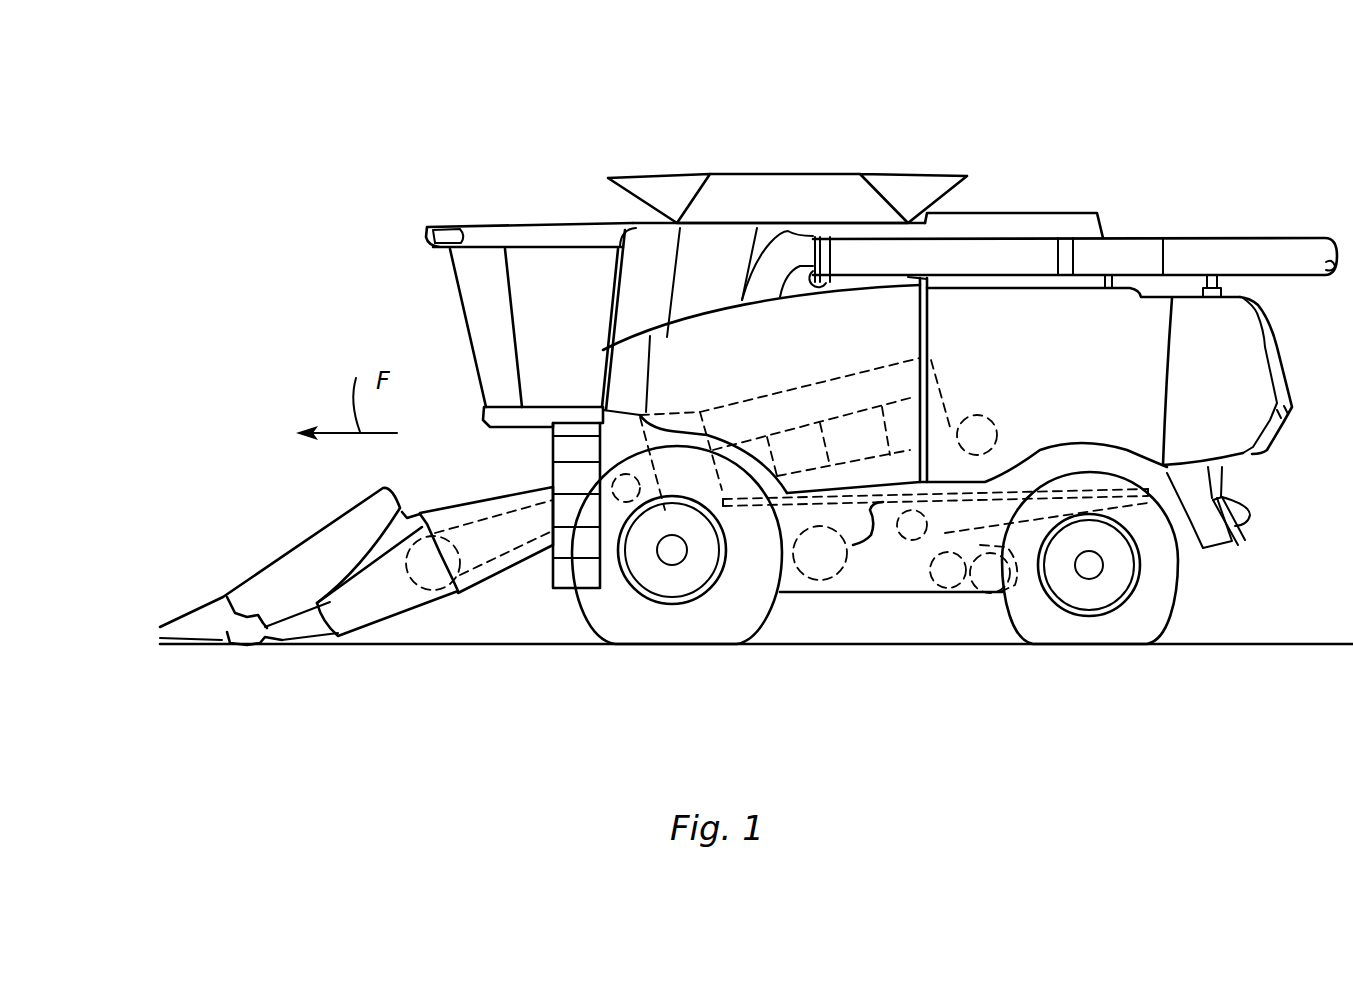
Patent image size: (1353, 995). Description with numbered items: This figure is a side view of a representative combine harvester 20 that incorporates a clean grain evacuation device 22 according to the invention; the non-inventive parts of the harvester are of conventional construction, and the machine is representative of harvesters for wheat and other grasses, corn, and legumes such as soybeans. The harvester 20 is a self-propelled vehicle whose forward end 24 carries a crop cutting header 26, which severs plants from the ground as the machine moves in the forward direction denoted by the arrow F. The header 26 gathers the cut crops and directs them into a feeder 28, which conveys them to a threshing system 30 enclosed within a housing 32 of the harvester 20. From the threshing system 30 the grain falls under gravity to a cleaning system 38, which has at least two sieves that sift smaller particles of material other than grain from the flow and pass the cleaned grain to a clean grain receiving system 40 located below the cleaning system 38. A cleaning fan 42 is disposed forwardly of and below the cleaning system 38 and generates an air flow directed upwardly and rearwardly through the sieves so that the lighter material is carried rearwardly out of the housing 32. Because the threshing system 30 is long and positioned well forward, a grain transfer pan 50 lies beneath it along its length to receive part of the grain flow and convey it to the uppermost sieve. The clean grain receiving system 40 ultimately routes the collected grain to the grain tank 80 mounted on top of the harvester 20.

The combine harvester 20 is at (1211, 175).
The clean grain evacuation device 22 is at (893, 543).
The forward end 24 is at (551, 485).
The crop cutting header 26 is at (390, 640).
The feeder 28 is at (500, 590).
The threshing system 30 is at (787, 393).
The housing 32 is at (1027, 288).
The cleaning system 38 is at (996, 494).
The clean grain receiving system 40 is at (965, 590).
The cleaning fan 42 is at (827, 575).
The grain transfer pan 50 is at (752, 507).
The grain tank 80 is at (782, 173).